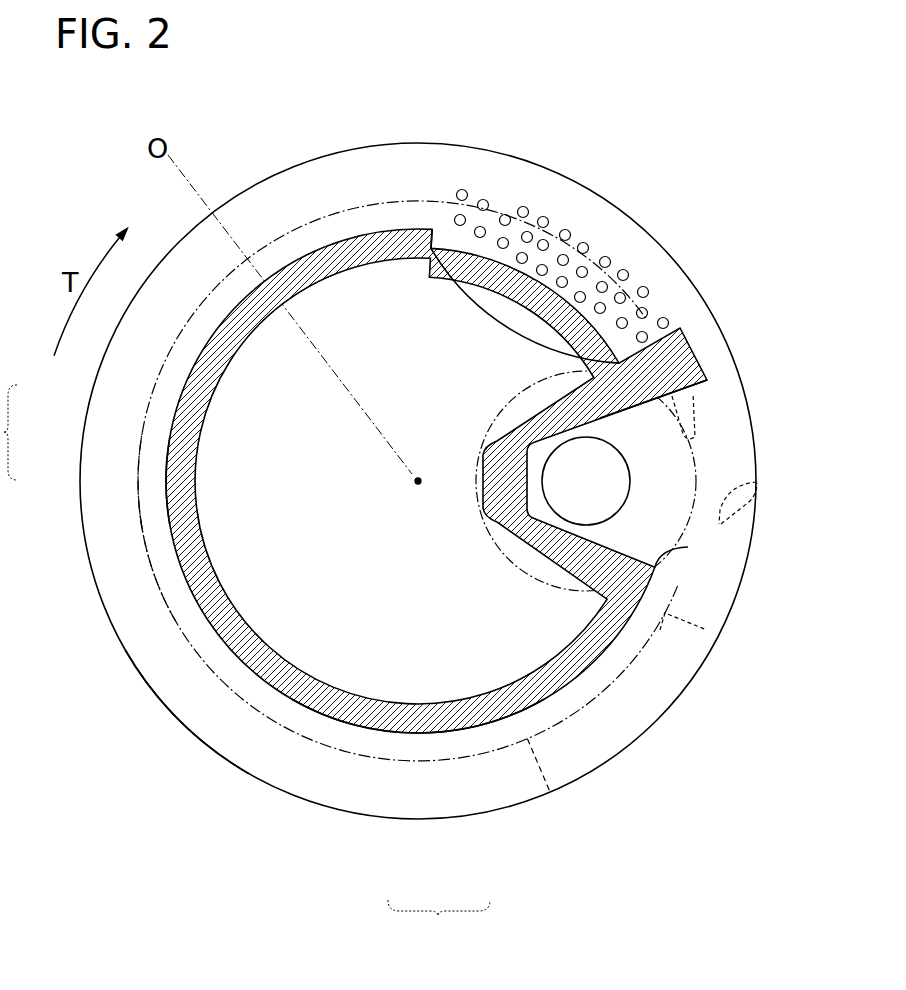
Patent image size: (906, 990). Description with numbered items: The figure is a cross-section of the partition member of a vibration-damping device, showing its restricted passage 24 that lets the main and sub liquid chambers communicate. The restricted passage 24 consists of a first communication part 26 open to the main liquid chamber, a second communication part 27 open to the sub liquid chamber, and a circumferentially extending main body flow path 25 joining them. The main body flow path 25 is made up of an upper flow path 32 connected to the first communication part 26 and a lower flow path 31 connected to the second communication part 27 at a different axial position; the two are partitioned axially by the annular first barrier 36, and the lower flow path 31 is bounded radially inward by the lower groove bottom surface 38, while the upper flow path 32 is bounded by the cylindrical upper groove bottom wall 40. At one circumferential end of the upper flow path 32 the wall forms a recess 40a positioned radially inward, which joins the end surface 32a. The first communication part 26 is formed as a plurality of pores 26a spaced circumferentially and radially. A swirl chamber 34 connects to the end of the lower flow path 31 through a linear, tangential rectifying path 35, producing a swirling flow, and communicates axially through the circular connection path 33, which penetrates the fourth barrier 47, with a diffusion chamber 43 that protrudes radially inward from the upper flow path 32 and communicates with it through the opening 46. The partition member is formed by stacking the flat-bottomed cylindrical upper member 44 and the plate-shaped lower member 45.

The restricted passage 24 is at (348, 190).
The main body flow path 25 is at (439, 925).
The first communication part 26 is at (606, 237).
The pores 26a is at (464, 189).
The second communication part 27 is at (571, 738).
The lower flow path 31 is at (448, 776).
The upper flow path 32 is at (398, 748).
The end surface 32a is at (686, 392).
The connection path 33 is at (612, 503).
The swirl chamber 34 is at (660, 437).
The rectifying path 35 is at (757, 483).
The first barrier 36 is at (180, 688).
The lower groove bottom surface 38 is at (150, 572).
The upper groove bottom wall 40 is at (298, 722).
The recess 40a is at (507, 258).
The diffusion chamber 43 is at (655, 470).
The upper member 44 is at (163, 408).
The lower member 45 is at (128, 452).
The opening 46 is at (688, 547).
The fourth barrier 47 is at (603, 542).